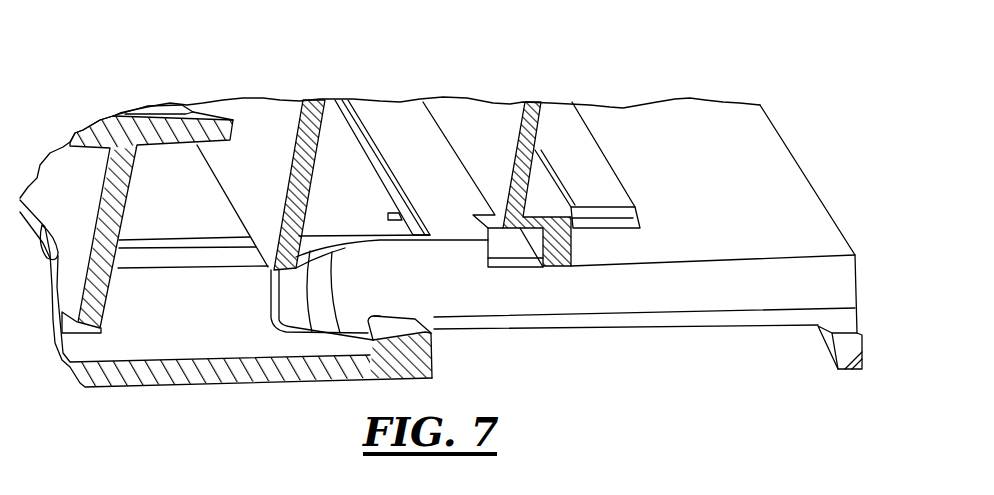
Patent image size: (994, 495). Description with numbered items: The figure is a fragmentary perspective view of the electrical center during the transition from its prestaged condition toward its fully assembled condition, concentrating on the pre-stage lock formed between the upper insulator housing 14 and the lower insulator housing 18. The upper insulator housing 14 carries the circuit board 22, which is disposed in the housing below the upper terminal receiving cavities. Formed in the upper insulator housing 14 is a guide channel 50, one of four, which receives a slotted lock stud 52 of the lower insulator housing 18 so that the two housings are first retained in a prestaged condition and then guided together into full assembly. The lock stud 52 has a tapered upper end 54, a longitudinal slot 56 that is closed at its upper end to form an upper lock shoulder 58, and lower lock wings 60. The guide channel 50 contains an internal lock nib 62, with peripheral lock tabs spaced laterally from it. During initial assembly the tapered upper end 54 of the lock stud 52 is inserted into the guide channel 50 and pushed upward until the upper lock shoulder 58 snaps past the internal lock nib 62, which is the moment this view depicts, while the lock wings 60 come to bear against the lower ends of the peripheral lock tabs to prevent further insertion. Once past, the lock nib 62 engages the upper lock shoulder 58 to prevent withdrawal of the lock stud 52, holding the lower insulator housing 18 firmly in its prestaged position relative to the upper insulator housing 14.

The upper insulator housing 14 is at (195, 377).
The lower insulator housing 18 is at (818, 217).
The circuit board 22 is at (313, 102).
The guide channel 50 is at (262, 373).
The lock stud 52 is at (742, 293).
The tapered upper end 54 is at (288, 301).
The longitudinal slot 56 is at (633, 320).
The upper lock shoulder 58 is at (372, 319).
The lower lock wing 60 is at (455, 238).
The internal lock nib 62 is at (408, 352).